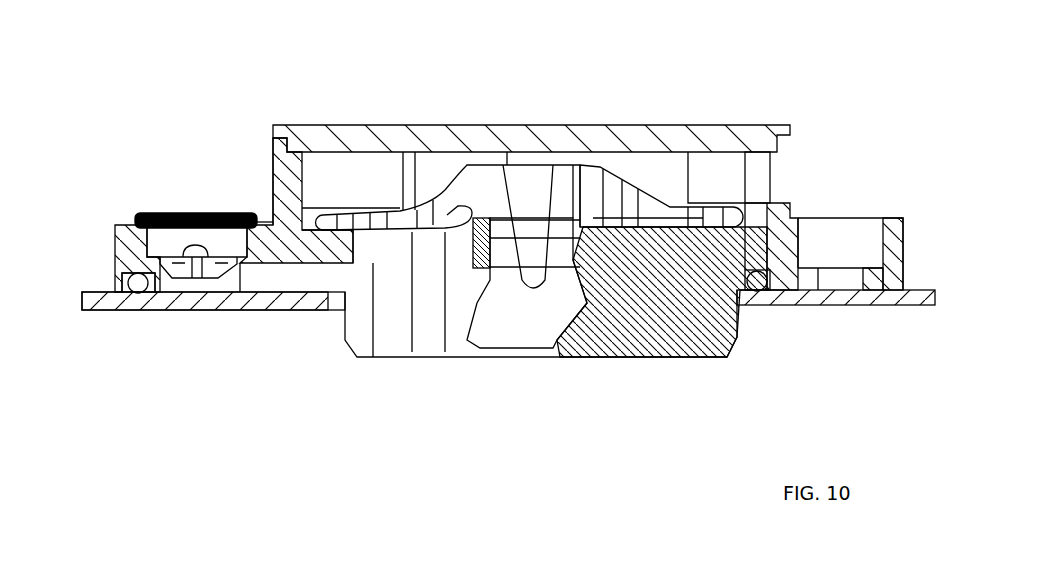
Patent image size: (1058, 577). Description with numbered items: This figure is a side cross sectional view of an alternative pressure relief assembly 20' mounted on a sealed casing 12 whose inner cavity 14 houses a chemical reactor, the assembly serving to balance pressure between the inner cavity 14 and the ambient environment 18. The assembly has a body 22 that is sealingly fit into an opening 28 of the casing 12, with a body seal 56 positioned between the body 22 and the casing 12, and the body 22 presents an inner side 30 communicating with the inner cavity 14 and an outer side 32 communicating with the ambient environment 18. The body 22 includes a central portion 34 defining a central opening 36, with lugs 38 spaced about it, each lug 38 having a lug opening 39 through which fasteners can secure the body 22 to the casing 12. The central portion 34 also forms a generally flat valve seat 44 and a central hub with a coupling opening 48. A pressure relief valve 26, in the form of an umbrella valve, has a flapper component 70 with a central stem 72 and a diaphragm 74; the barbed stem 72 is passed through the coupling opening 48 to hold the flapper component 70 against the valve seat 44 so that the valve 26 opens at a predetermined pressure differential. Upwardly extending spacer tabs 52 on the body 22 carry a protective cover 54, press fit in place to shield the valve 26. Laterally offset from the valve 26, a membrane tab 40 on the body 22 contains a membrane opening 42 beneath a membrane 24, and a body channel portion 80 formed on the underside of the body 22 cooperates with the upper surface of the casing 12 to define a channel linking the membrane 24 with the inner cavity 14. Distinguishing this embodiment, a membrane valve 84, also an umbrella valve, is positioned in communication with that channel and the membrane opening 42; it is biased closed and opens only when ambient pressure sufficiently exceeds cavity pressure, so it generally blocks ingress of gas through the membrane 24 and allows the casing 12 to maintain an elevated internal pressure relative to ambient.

The casing 12 is at (102, 310).
The inner cavity 14 is at (265, 392).
The ambient environment 18 is at (776, 76).
The pressure relief assembly 20' is at (517, 57).
The body 22 is at (105, 233).
The membrane 24 is at (213, 213).
The pressure relief valve 26 is at (450, 175).
The opening 28 is at (337, 313).
The inner side 30 is at (630, 320).
The outer side 32 is at (727, 177).
The central portion 34 is at (318, 190).
The central opening 36 is at (495, 325).
The lug 38 is at (903, 218).
The lug opening 39 is at (824, 243).
The membrane tab 40 is at (113, 272).
The membrane opening 42 is at (173, 228).
The valve seat 44 is at (342, 203).
The coupling opening 48 is at (477, 280).
The spacer tab 52 is at (275, 125).
The protective cover 54 is at (600, 143).
The body seal 56 is at (757, 292).
The flapper component 70 is at (575, 155).
The central stem 72 is at (597, 303).
The diaphragm 74 is at (707, 205).
The body channel portion 80 is at (212, 282).
The membrane valve 84 is at (177, 275).